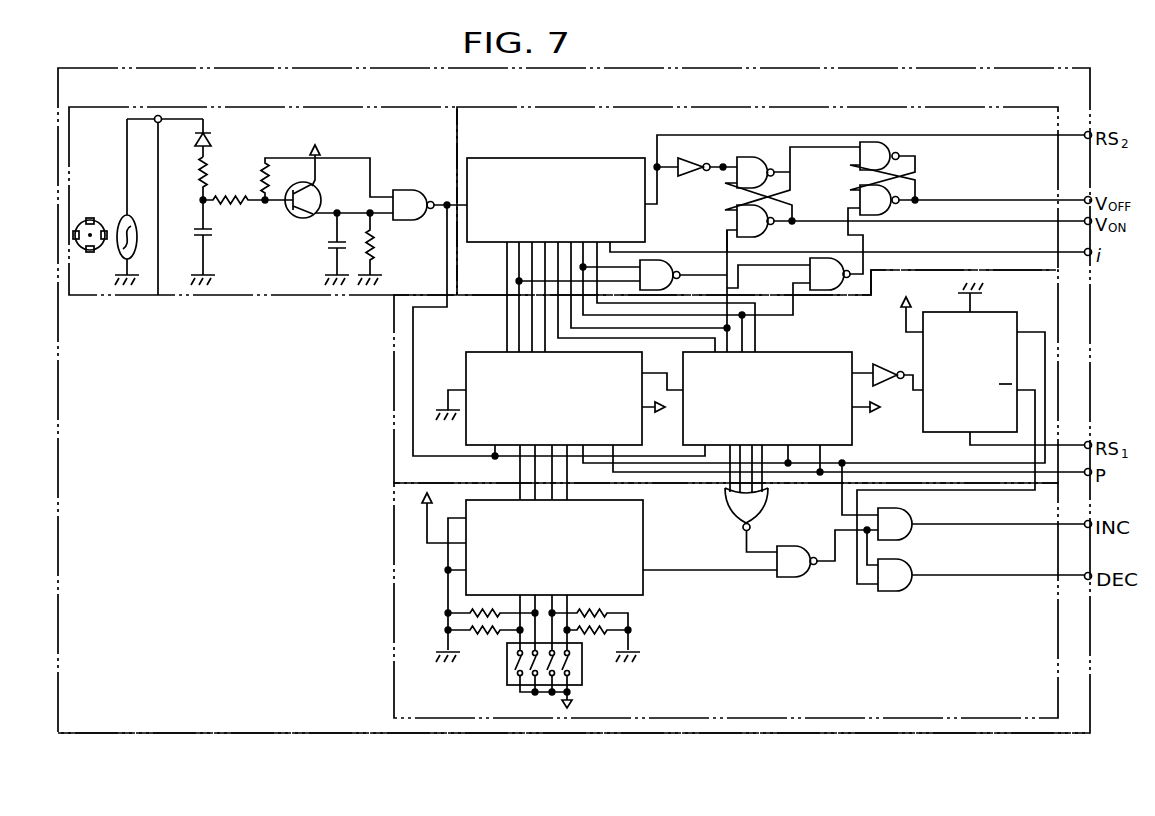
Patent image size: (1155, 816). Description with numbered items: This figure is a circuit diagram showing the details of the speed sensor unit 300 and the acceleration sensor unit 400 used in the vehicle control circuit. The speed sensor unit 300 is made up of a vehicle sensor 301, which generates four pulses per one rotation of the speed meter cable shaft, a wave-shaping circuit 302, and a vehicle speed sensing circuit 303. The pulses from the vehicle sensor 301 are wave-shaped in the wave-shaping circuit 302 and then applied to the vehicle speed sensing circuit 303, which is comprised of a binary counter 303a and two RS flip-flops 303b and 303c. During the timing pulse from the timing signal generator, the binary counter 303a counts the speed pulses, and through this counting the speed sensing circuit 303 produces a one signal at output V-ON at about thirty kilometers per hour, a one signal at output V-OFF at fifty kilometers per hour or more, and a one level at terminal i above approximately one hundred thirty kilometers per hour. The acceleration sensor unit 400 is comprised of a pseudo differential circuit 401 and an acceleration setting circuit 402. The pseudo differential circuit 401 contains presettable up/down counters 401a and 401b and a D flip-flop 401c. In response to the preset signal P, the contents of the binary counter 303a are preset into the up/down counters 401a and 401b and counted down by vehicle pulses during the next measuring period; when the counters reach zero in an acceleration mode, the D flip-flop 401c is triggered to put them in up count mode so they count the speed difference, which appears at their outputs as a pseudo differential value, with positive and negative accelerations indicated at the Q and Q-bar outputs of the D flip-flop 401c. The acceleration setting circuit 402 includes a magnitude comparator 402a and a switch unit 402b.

The speed sensor unit 300 is at (917, 68).
The vehicle sensor 301 is at (148, 113).
The wave-shaping circuit 302 is at (415, 125).
The vehicle speed sensing circuit 303 is at (690, 106).
The binary counter 303a is at (568, 158).
The RS flip-flop 303b is at (773, 150).
The RS flip-flop 303c is at (902, 143).
The acceleration sensor unit 400 is at (912, 735).
The pseudo differential circuit 401 is at (393, 395).
The presettable up/down counter 401a is at (465, 362).
The presettable up/down counter 401b is at (793, 352).
The D flip-flop 401c is at (990, 312).
The acceleration setting circuit 402 is at (393, 553).
The magnitude comparator 402a is at (672, 517).
The switch unit 402b is at (583, 660).